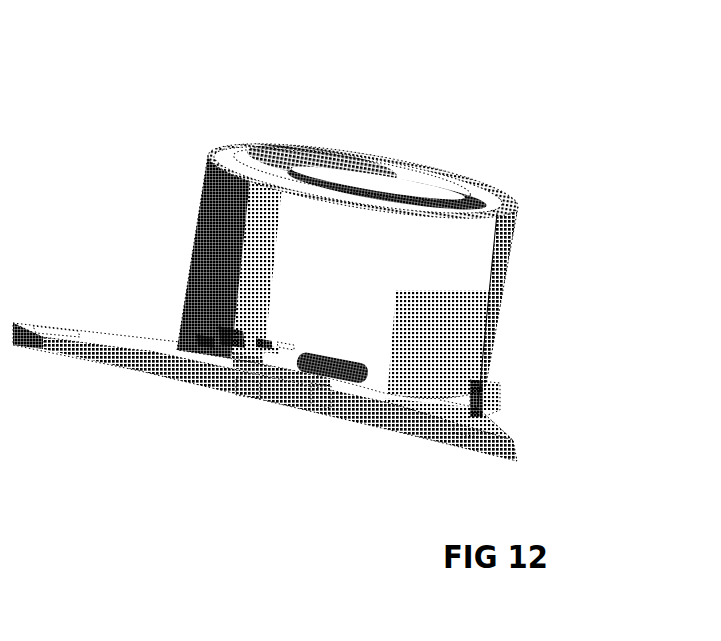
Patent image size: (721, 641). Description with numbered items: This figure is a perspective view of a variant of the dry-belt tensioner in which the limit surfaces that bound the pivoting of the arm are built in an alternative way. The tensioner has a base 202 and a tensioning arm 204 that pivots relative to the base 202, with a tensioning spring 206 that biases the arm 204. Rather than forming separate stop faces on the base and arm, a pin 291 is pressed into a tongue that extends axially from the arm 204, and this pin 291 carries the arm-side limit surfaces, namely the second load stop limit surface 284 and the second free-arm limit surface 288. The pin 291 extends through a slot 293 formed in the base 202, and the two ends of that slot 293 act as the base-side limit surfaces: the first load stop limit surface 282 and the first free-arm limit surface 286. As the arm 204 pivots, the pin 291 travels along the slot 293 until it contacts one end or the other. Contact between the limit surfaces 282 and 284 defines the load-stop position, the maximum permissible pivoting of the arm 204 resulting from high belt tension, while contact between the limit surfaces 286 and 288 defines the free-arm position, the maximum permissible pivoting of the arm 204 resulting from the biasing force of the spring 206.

The base 202 is at (213, 218).
The tensioning arm 204 is at (295, 353).
The tensioning spring 206 is at (210, 333).
The first load stop limit surface 282 is at (202, 340).
The second load stop limit surface 284 is at (258, 346).
The first free-arm limit surface 286 is at (366, 377).
The second free-arm limit surface 288 is at (272, 344).
The pin 291 is at (268, 340).
The slot 293 is at (318, 364).